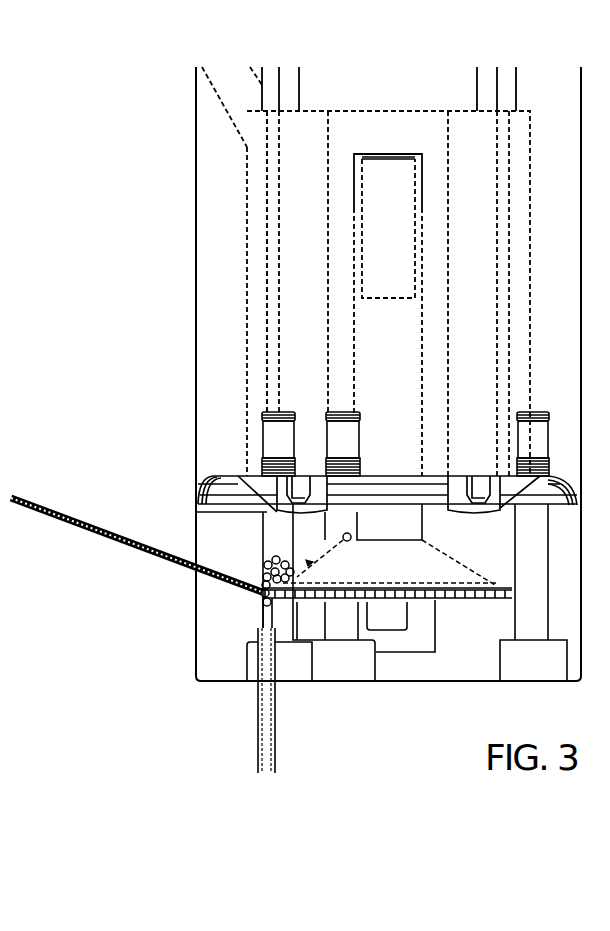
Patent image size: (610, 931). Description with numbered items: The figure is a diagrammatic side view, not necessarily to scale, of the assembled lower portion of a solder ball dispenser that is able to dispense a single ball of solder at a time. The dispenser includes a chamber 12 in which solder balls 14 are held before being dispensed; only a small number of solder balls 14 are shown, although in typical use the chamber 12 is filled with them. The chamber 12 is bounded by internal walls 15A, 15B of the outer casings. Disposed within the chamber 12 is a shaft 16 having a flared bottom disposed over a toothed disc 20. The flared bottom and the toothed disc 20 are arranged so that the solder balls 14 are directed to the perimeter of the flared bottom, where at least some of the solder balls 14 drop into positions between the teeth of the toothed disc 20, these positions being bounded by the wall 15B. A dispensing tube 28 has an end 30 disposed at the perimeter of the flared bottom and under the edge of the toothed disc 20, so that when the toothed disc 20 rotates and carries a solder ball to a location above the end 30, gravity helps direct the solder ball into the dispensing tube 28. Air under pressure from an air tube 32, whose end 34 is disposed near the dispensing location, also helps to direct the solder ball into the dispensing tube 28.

The chamber 12 is at (295, 190).
The internal wall 15A is at (267, 277).
The internal wall 15B is at (240, 522).
The solder balls 14 is at (263, 568).
The shaft 16 is at (400, 374).
The toothed disc 20 is at (318, 600).
The dispensing tube 28 is at (262, 610).
The end of dispensing tube 30 is at (262, 603).
The air tube 32 is at (65, 525).
The end of air tube 34 is at (262, 597).